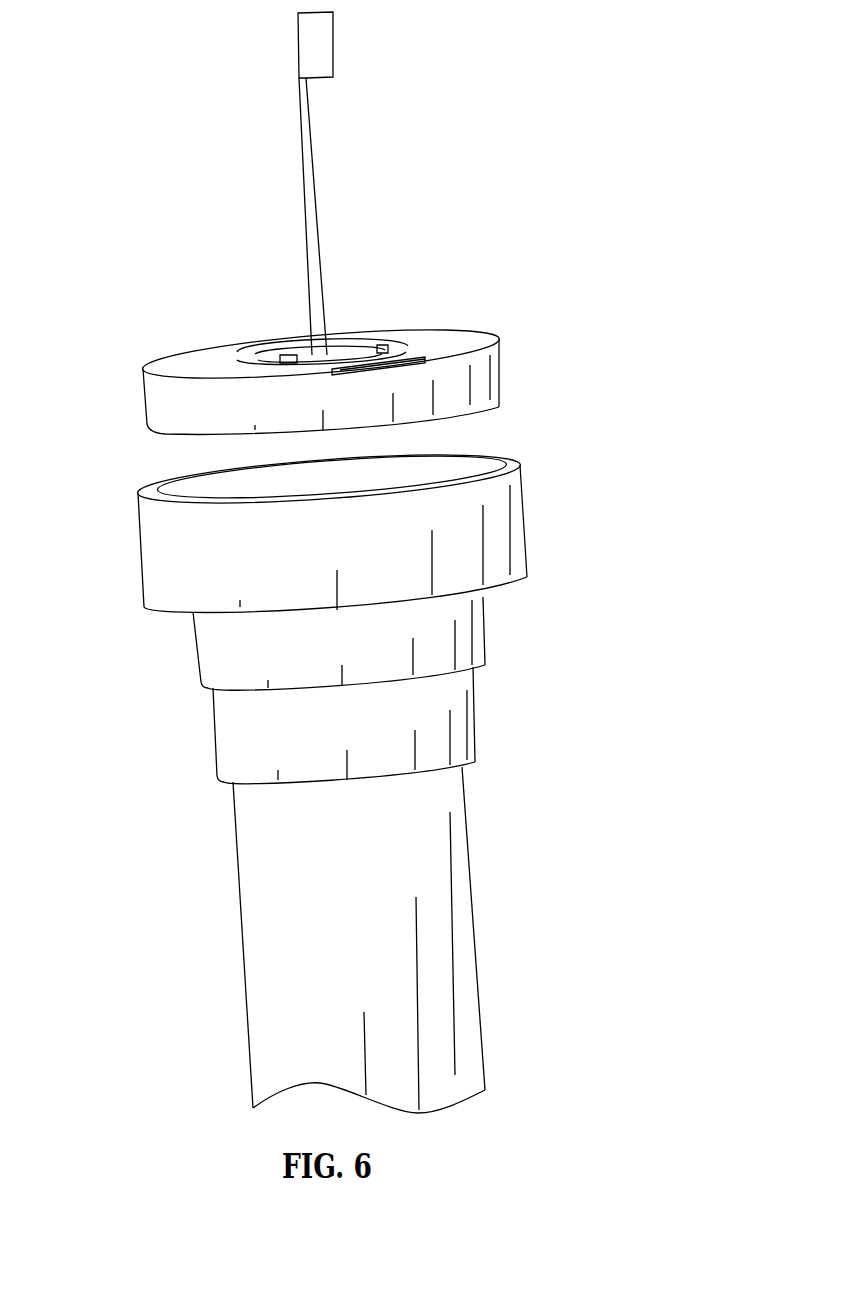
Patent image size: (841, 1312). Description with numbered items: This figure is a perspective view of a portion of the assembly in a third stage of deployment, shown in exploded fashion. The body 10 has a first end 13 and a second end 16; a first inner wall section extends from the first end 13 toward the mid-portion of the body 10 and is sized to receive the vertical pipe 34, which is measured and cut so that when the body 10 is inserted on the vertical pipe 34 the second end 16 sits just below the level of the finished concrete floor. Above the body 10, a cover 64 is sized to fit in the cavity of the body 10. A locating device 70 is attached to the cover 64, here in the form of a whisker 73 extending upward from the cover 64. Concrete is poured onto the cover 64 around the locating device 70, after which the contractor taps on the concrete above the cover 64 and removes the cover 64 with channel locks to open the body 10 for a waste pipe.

The body 10 is at (283, 779).
The first end 13 is at (475, 762).
The second end 16 is at (148, 491).
The vertical pipe 34 is at (244, 975).
The cover 64 is at (468, 335).
The locating device 70 is at (290, 183).
The whisker 73 is at (334, 43).